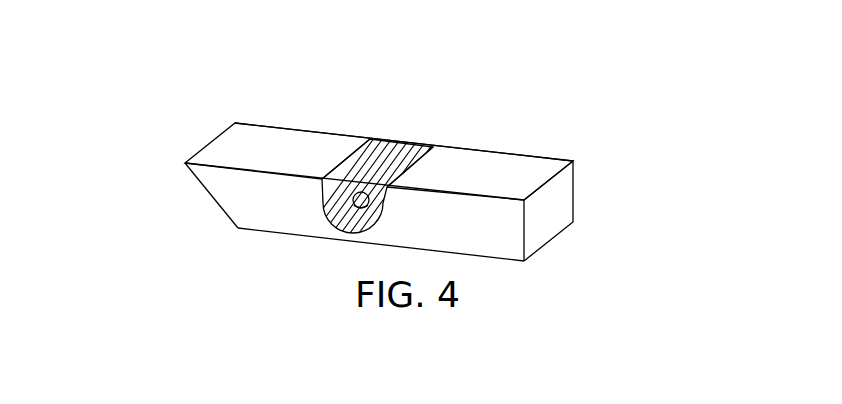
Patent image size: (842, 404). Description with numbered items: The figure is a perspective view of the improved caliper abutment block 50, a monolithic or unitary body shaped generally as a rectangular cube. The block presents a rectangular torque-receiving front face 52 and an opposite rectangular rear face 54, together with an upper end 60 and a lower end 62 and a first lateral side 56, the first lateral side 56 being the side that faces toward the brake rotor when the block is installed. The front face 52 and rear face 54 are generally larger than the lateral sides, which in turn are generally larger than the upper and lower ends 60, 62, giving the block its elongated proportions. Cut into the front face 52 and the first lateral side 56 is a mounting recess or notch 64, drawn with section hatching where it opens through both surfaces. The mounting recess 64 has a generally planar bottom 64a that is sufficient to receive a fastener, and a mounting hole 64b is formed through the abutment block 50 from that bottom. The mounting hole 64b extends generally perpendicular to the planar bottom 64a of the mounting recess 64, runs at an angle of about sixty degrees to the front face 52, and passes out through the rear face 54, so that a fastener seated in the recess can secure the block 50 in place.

The caliper abutment block 50 is at (248, 95).
The front face 52 is at (510, 172).
The rear face 54 is at (258, 232).
The first lateral side 56 is at (478, 250).
The upper end 60 is at (552, 218).
The lower end 62 is at (205, 195).
The mounting recess 64 is at (423, 129).
The planar bottom 64a is at (388, 148).
The mounting hole 64b is at (353, 211).